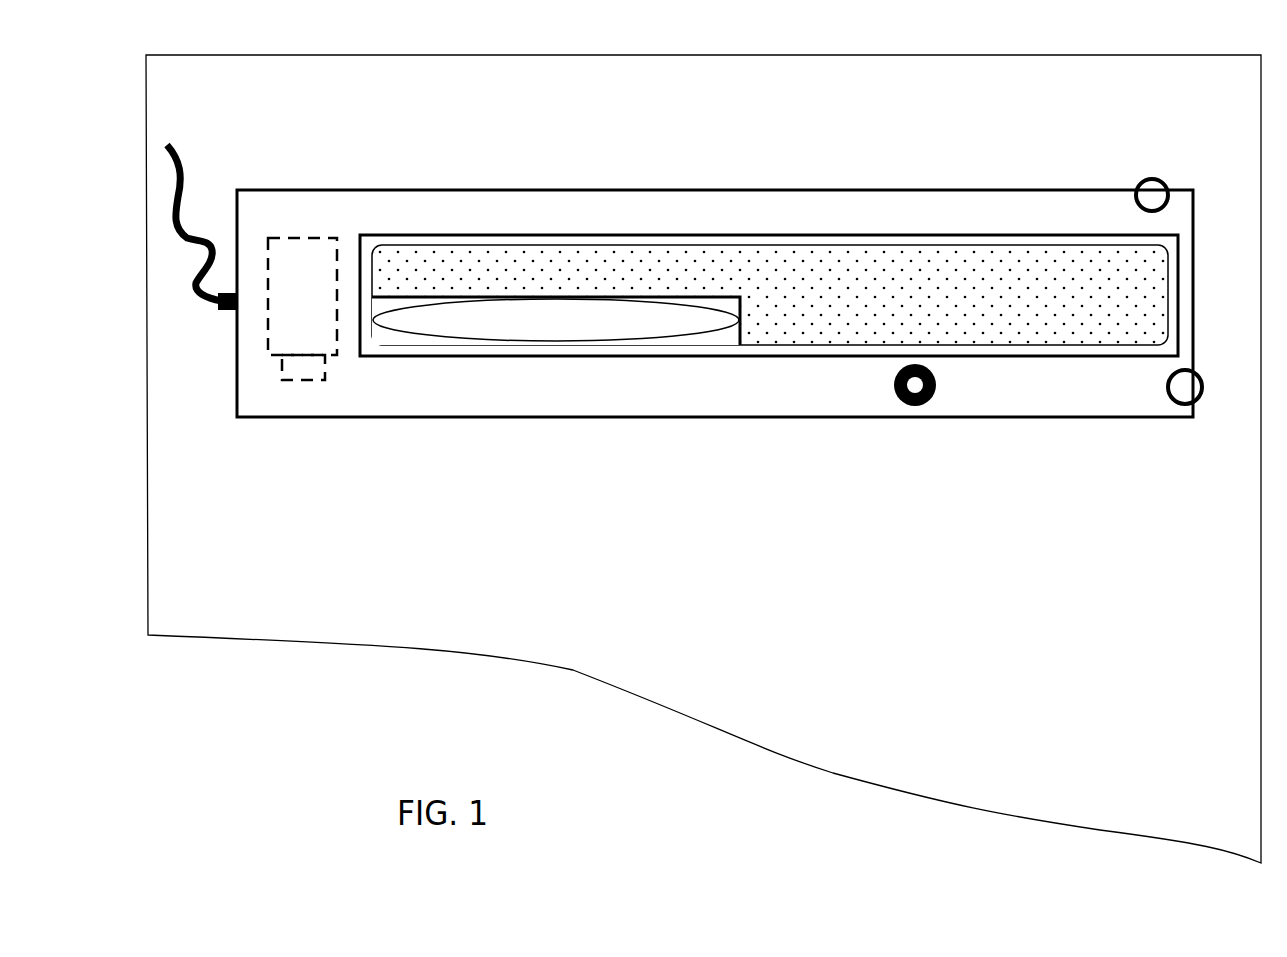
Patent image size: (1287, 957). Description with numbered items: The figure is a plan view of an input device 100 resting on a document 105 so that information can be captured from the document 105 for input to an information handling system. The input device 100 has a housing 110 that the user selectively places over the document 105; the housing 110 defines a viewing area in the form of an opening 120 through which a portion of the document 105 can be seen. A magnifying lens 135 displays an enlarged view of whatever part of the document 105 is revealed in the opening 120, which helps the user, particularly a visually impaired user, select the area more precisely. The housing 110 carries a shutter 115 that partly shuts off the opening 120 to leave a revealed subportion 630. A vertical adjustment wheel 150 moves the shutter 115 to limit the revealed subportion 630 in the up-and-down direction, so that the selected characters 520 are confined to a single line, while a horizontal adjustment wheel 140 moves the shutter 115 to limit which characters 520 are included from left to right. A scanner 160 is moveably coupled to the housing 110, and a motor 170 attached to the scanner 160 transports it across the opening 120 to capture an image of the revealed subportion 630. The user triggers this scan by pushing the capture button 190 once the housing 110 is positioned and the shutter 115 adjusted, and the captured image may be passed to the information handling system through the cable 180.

The input device 100 is at (496, 125).
The document 105 is at (1113, 712).
The housing 110 is at (1127, 232).
The shutter 115 is at (708, 262).
The opening 120 is at (910, 235).
The magnifying lens 135 is at (1047, 347).
The horizontal adjustment wheel 140 is at (1207, 393).
The vertical adjustment wheel 150 is at (1143, 178).
The scanner 160 is at (302, 267).
The motor 170 is at (303, 368).
The cable 180 is at (192, 180).
The capture button 190 is at (893, 378).
The selected characters 520 is at (507, 342).
The revealed subportion 630 is at (728, 338).